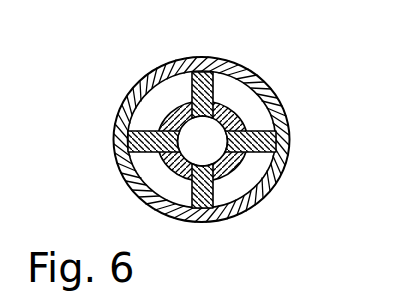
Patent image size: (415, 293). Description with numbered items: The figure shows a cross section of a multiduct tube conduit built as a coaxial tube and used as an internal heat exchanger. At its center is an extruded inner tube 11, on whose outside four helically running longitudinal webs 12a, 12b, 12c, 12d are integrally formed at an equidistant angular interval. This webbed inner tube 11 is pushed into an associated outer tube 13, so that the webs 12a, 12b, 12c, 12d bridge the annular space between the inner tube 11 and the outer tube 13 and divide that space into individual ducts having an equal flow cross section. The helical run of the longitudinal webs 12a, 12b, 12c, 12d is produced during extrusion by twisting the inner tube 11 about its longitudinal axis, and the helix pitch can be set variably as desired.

The inner tube 11 is at (240, 178).
The longitudinal web 12a is at (266, 118).
The longitudinal web 12b is at (186, 70).
The longitudinal web 12c is at (140, 137).
The longitudinal web 12d is at (222, 206).
The outer tube 13 is at (292, 137).